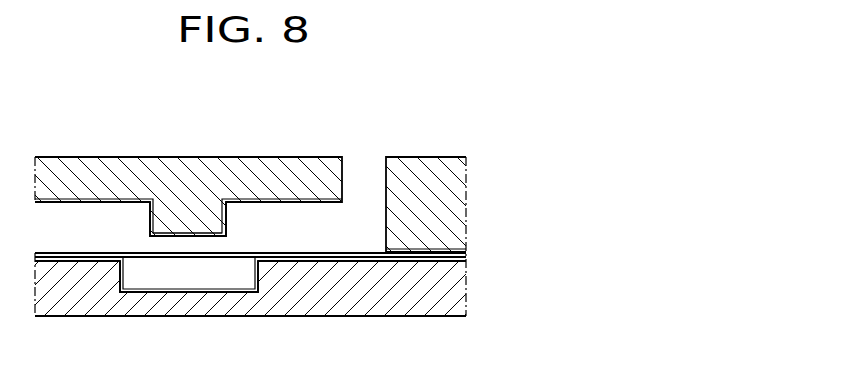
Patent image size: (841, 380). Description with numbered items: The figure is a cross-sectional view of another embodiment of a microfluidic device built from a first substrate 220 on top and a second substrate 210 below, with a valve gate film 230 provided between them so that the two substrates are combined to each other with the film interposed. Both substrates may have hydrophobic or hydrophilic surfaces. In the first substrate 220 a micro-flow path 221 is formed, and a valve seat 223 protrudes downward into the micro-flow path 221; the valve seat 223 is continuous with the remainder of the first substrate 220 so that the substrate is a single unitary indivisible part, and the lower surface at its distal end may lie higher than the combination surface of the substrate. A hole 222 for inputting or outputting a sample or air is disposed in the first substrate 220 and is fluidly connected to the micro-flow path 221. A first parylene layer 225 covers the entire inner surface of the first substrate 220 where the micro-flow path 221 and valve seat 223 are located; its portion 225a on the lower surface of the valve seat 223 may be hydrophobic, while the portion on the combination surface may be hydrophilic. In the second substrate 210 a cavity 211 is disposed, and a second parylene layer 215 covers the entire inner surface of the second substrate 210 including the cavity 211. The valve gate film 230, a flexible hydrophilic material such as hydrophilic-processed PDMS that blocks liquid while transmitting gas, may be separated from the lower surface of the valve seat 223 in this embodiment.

The second substrate 210 is at (462, 302).
The cavity 211 is at (188, 278).
The second parylene layer 215 is at (446, 263).
The first substrate 220 is at (247, 170).
The micro-flow path 221 is at (87, 218).
The hole 222 is at (367, 175).
The valve seat 223 is at (160, 218).
The first parylene layer 225 is at (448, 251).
The portion of the first parylene layer 225a is at (184, 236).
The valve gate film 230 is at (462, 257).